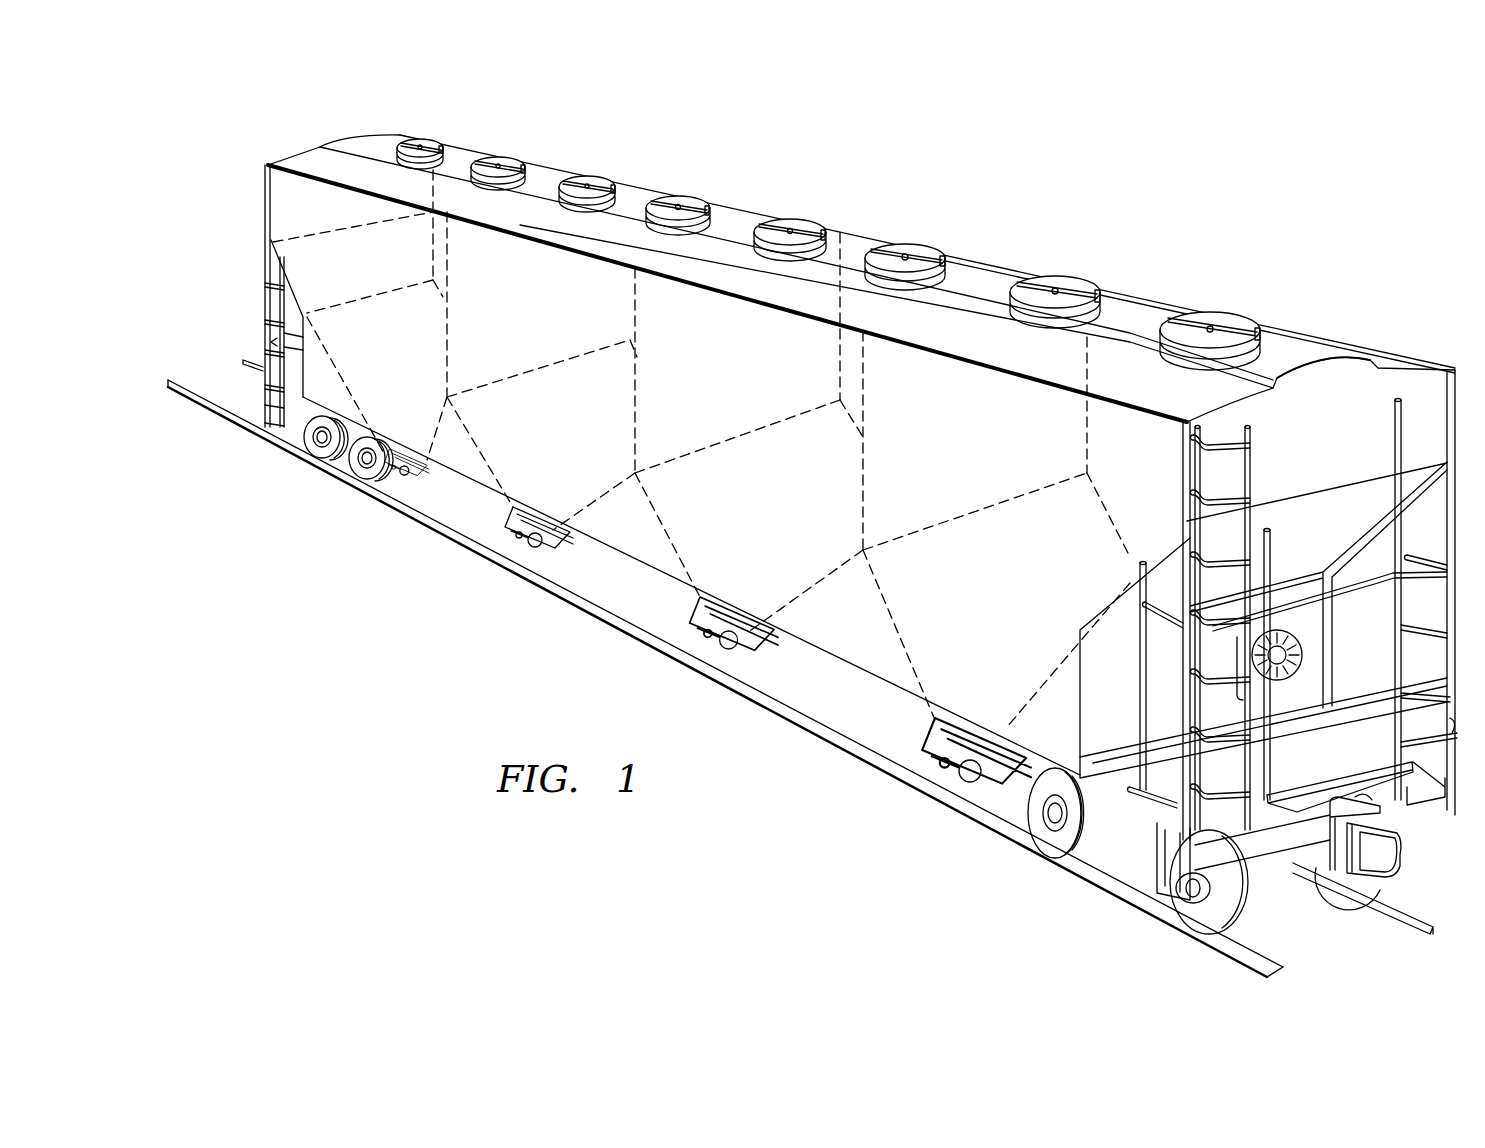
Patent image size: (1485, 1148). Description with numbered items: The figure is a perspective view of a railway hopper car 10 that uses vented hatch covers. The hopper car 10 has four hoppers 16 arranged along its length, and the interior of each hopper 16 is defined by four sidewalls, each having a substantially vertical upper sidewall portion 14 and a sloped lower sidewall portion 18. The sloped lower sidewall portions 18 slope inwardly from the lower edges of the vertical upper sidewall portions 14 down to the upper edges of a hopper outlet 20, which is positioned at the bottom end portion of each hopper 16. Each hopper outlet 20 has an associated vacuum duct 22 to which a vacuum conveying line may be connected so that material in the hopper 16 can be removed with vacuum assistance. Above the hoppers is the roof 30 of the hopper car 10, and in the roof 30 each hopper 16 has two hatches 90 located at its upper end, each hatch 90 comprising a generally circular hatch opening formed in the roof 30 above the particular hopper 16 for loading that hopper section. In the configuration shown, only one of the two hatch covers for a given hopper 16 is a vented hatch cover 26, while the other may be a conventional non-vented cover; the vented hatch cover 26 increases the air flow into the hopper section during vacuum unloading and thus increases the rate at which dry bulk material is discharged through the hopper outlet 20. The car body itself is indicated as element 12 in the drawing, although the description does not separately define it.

The hopper car 10 is at (1122, 180).
The car body 12 is at (1147, 299).
The vertical upper sidewall portion 14 is at (434, 247).
The hopper 16 is at (323, 281).
The sloped lower sidewall portion 18 is at (428, 435).
The hopper outlet 20 is at (428, 470).
The vacuum duct 22 is at (402, 476).
The vented hatch cover 26 is at (429, 138).
The roof 30 is at (1305, 355).
The hatch 90 is at (388, 140).